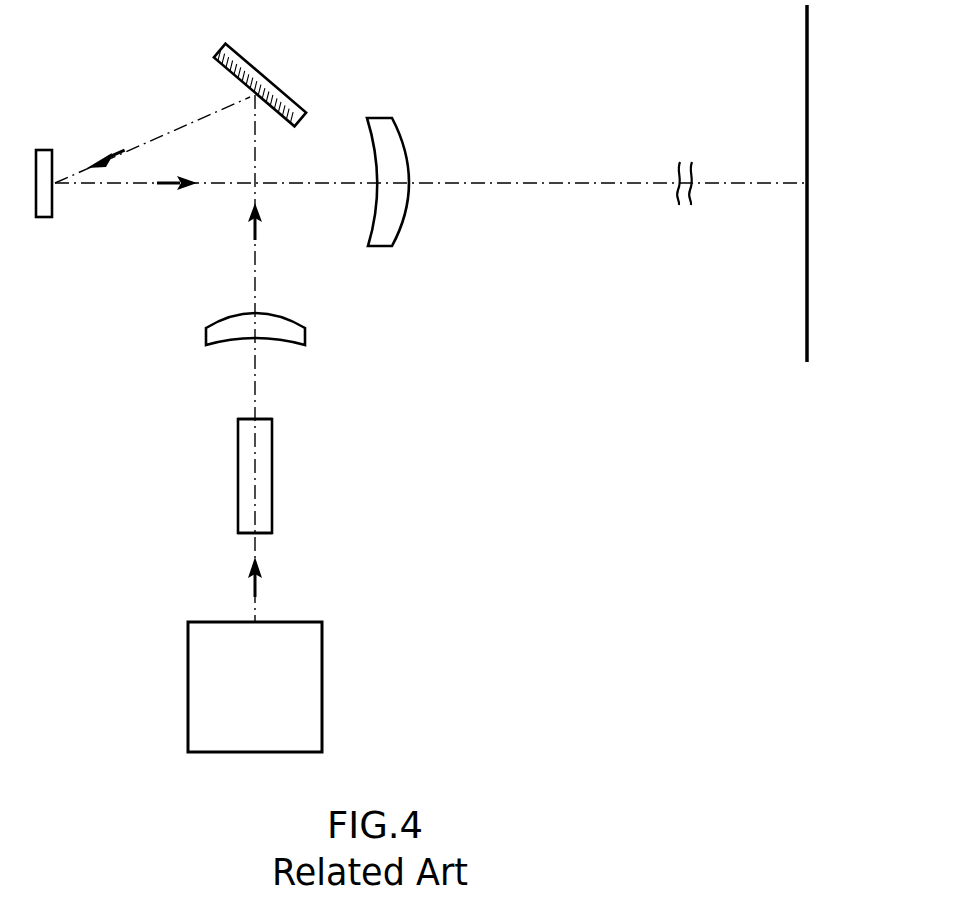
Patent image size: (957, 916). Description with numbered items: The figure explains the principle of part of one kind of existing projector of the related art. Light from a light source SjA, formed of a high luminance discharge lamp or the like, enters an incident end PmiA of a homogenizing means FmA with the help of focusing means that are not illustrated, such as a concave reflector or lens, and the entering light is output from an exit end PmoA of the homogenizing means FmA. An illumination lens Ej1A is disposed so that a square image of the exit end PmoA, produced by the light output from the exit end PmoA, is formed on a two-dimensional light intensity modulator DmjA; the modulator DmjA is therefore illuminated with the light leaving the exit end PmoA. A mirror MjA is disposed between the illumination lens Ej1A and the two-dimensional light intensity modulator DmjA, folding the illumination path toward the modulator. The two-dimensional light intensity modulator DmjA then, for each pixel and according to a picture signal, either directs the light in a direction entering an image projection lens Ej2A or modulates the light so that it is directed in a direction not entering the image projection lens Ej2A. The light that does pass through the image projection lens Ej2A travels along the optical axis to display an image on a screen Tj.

The mirror MjA is at (226, 64).
The two-dimensional light intensity modulator DmjA is at (53, 156).
The image projection lens Ej2A is at (381, 117).
The illumination lens Ej1A is at (307, 335).
The homogenizing means FmA is at (273, 478).
The exit end PmoA is at (247, 418).
The incident end PmiA is at (247, 535).
The light source SjA is at (188, 652).
The screen Tj is at (806, 347).